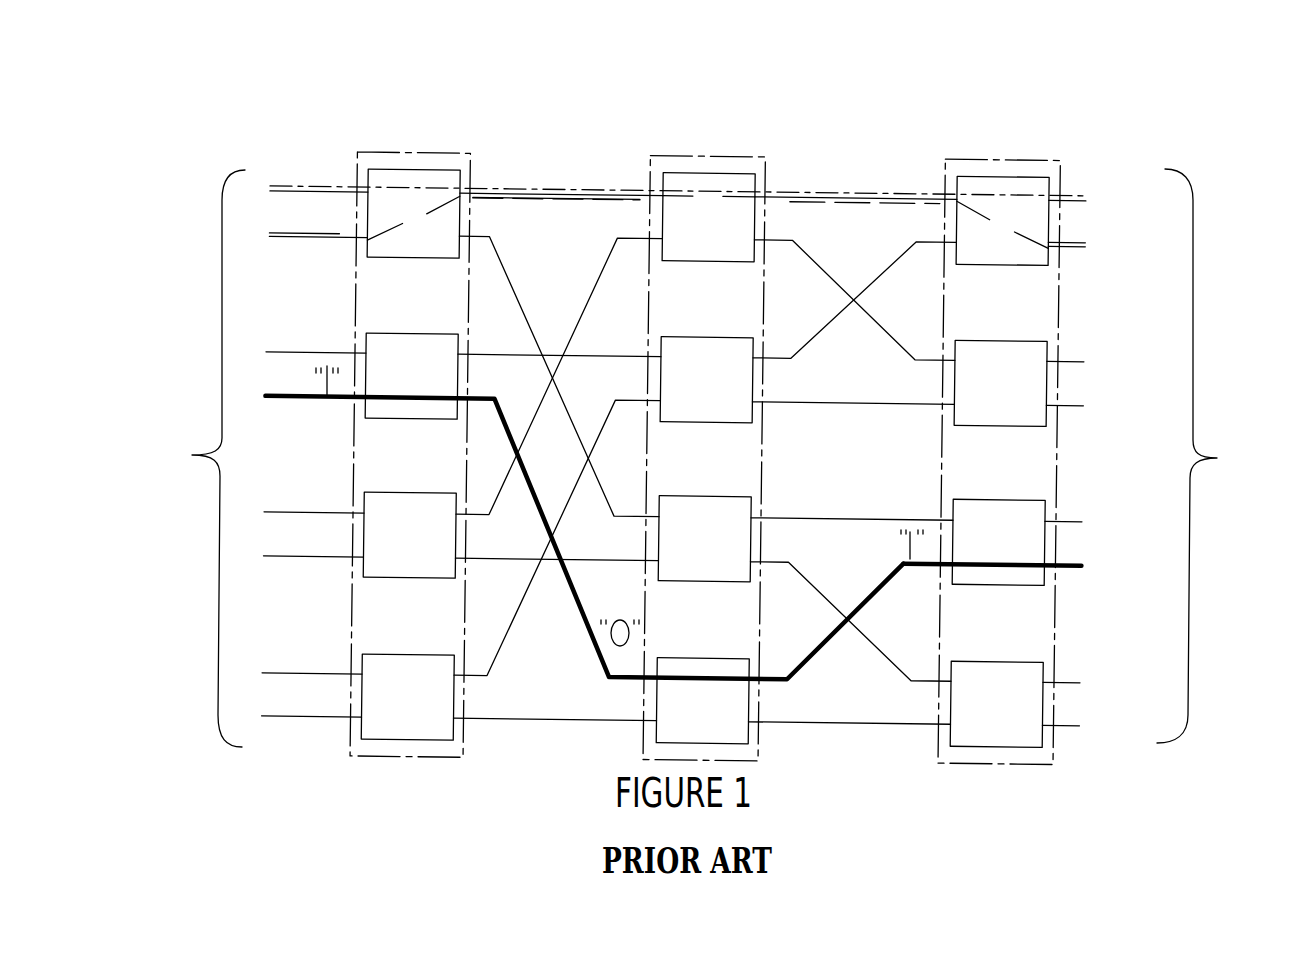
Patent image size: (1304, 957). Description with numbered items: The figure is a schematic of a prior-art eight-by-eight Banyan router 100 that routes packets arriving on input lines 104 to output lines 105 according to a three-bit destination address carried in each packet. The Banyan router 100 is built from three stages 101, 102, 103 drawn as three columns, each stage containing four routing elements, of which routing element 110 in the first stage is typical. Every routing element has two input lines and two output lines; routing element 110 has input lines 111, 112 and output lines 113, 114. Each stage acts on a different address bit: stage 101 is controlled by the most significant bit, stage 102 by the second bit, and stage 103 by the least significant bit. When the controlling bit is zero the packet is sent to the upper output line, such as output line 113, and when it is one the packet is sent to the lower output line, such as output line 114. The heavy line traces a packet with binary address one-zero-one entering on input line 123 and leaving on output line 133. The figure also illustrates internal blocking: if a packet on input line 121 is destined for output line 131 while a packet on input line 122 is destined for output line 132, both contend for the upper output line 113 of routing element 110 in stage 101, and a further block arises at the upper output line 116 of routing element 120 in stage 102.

The Banyan router 100 is at (1163, 120).
The first stage 101 is at (418, 143).
The second stage 102 is at (712, 147).
The third stage 103 is at (1008, 150).
The input lines 104 is at (189, 458).
The output lines 105 is at (1217, 456).
The routing element 110 is at (458, 178).
The input line 111 is at (343, 186).
The input line 112 is at (344, 237).
The output line 113 is at (508, 187).
The output line 114 is at (487, 234).
The output line 116 is at (827, 193).
The routing element 120 is at (742, 191).
The input line 121 is at (280, 186).
The input line 122 is at (280, 238).
The input line 123 is at (268, 397).
The output line 131 is at (1092, 184).
The output line 132 is at (1082, 248).
The output line 133 is at (1076, 558).